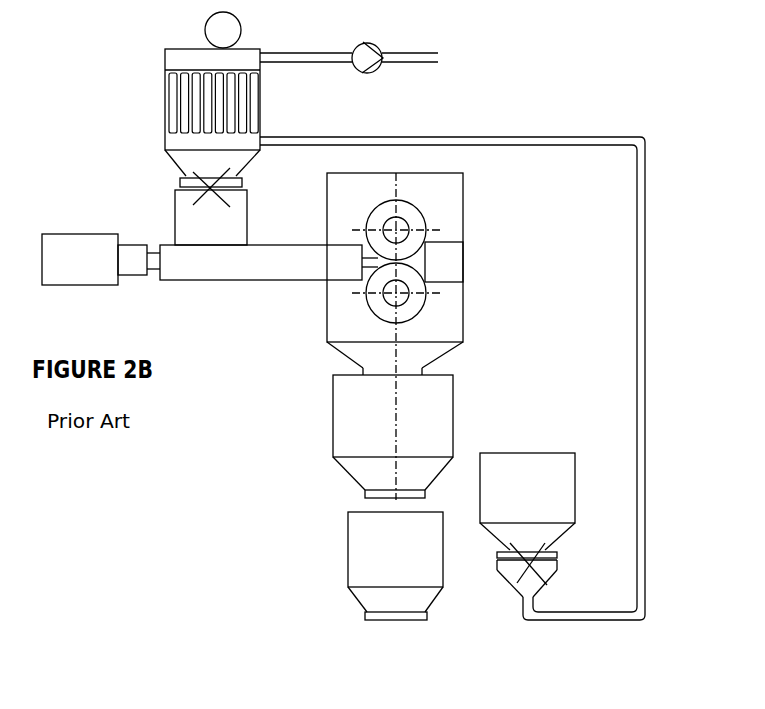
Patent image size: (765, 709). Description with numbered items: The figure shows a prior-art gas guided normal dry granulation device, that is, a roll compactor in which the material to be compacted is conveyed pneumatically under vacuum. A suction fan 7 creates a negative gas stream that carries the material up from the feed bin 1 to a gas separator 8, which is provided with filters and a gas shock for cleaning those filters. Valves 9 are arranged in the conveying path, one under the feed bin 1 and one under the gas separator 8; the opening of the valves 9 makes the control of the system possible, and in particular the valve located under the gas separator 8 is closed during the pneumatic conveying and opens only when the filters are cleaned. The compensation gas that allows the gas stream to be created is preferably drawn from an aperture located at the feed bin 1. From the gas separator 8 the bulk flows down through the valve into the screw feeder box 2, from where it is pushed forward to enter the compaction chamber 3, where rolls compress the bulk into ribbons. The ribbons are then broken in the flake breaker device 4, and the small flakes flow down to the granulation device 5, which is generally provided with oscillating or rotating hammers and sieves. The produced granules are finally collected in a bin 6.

The feed bin 1 is at (536, 506).
The screw feeder box 2 is at (206, 273).
The compaction chamber 3 is at (343, 211).
The flake breaker device 4 is at (447, 274).
The granulation device 5 is at (371, 436).
The bin 6 is at (399, 561).
The suction fan 7 is at (349, 69).
The gas separator 8 is at (212, 94).
The valves 9 is at (217, 231).